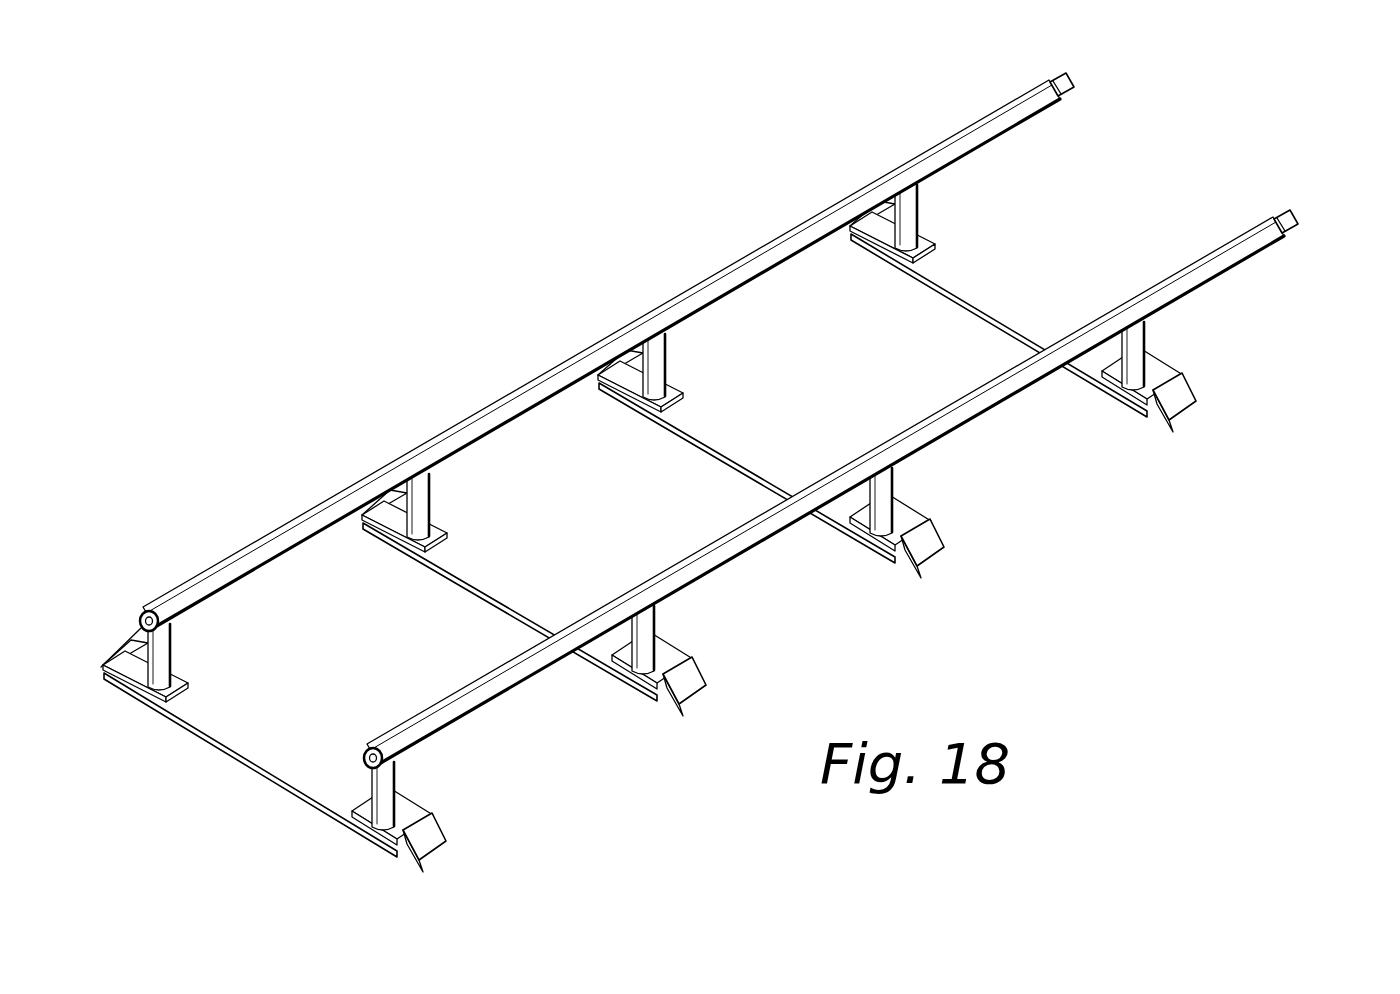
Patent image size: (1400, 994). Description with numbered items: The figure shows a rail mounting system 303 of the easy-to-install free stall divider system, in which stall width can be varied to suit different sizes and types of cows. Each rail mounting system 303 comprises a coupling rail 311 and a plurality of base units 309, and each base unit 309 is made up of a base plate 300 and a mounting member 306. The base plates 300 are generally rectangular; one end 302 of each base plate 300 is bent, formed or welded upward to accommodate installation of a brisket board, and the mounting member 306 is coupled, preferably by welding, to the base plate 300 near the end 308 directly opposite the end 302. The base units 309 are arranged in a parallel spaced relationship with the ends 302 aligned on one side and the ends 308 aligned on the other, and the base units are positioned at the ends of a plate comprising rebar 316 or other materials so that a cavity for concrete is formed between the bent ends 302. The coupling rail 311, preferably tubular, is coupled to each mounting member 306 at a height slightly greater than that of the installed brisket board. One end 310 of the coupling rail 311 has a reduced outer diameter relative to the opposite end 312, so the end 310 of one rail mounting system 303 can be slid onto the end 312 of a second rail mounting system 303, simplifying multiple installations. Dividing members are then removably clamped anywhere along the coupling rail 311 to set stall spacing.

The base plate 300 is at (418, 871).
The end of base plate 302 is at (419, 816).
The rail mounting system 303 is at (812, 572).
The mounting member 306 is at (391, 794).
The end of base plate 308 is at (357, 809).
The base unit 309 is at (103, 686).
The end of coupling rail 310 is at (1076, 80).
The coupling rail 311 is at (990, 412).
The end of coupling rail 312 is at (369, 757).
The rebar 316 is at (243, 766).